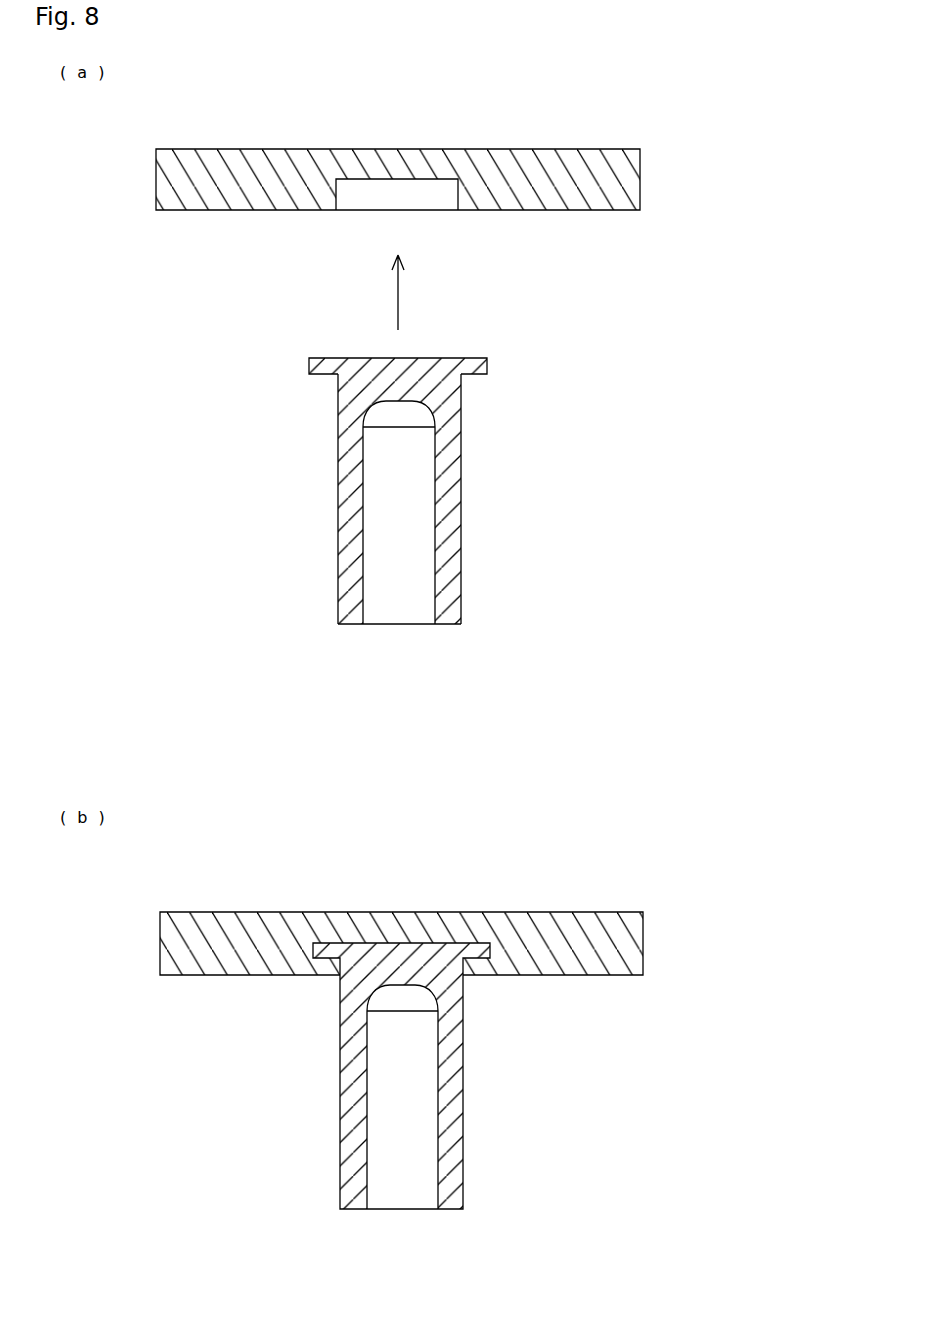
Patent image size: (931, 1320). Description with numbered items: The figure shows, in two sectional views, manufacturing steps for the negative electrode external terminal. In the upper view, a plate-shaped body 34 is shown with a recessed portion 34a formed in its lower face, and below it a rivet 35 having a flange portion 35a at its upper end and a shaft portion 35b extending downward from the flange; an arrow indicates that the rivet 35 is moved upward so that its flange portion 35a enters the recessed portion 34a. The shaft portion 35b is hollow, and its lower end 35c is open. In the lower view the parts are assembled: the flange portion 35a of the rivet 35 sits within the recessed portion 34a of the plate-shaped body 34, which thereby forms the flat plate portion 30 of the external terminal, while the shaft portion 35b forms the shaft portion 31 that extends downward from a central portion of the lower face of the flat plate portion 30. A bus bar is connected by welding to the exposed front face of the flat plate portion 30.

The plate-shaped body 34 is at (432, 171).
The recessed portion 34a is at (445, 211).
The rivet 35 is at (459, 531).
The flange portion 35a is at (487, 362).
The shaft portion 35b is at (461, 504).
The bottom end of rivet member 35c is at (362, 602).
The flat plate portion 30 is at (582, 912).
The shaft portion 31 is at (463, 1117).